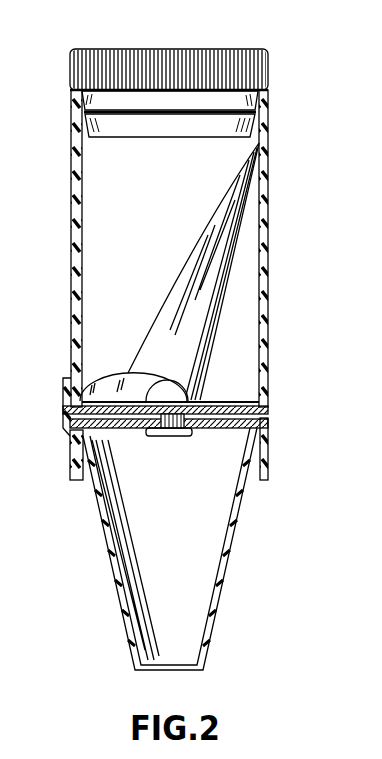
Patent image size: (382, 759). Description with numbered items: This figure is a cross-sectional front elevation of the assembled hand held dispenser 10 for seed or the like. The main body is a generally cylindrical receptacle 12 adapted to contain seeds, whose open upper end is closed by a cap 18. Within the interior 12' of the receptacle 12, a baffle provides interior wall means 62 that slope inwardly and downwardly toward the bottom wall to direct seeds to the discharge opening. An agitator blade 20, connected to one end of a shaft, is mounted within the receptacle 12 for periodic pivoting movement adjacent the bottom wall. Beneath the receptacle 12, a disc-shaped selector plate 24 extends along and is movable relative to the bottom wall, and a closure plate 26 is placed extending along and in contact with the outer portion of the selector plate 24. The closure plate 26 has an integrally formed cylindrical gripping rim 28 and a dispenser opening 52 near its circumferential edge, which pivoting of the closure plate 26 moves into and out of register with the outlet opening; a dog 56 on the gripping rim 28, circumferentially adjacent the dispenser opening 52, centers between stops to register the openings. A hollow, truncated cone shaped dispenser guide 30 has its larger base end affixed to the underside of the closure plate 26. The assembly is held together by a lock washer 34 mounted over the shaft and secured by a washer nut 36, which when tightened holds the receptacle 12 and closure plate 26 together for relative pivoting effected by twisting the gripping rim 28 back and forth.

The hand held dispenser 10 is at (138, 248).
The receptacle 12 is at (146, 248).
The interior of receptacle 12' is at (141, 254).
The cap 18 is at (173, 49).
The agitator blade 20 is at (108, 378).
The selector plate 24 is at (240, 407).
The closure plate 26 is at (256, 432).
The gripping rim 28 is at (265, 468).
The dispenser guide 30 is at (222, 582).
The lock washer 34 is at (200, 430).
The washer nut 36 is at (162, 437).
The dispenser opening 52 is at (85, 445).
The dog 56 is at (63, 390).
The interior wall means 62 is at (192, 240).